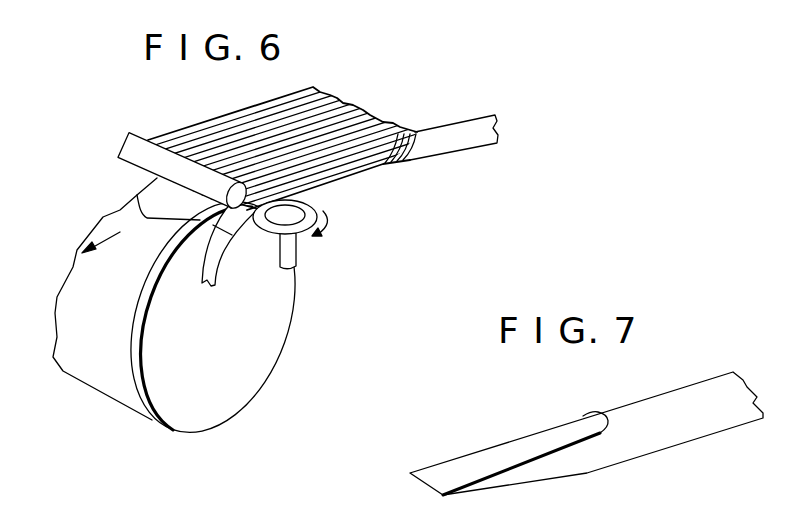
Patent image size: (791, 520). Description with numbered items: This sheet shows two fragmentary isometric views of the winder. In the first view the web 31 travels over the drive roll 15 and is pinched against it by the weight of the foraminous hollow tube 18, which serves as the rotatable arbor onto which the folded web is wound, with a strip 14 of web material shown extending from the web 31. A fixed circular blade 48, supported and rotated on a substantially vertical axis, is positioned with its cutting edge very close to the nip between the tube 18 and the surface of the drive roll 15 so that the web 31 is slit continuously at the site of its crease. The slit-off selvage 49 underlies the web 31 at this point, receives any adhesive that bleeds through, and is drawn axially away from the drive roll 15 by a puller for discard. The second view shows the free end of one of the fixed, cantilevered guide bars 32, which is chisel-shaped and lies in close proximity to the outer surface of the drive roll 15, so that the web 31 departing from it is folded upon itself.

In FIG. 6, the tape strip 14 is at (397, 128).
In FIG. 6, the drive roll 15 is at (229, 322).
In FIG. 6, the foraminous hollow tube 18 is at (211, 189).
In FIG. 6, the web 31 is at (358, 110).
In FIG. 6, the fixed circular blade 48 is at (273, 236).
In FIG. 6, the selvage 49 is at (137, 195).
In FIG. 7, the guide bars 32 is at (662, 400).